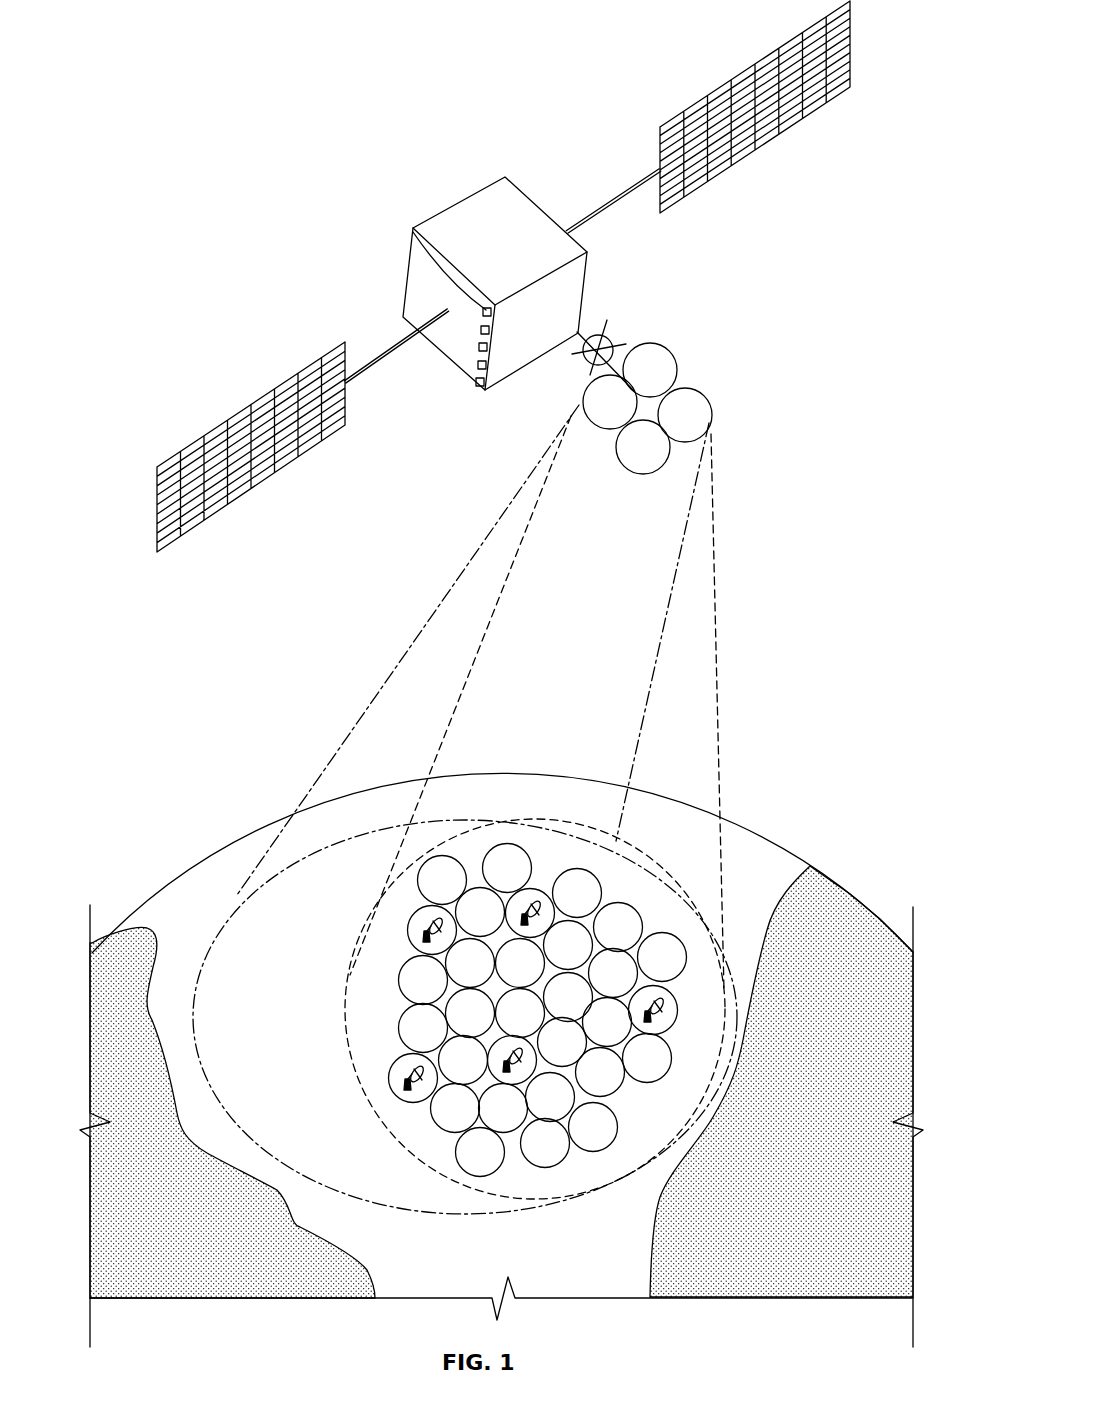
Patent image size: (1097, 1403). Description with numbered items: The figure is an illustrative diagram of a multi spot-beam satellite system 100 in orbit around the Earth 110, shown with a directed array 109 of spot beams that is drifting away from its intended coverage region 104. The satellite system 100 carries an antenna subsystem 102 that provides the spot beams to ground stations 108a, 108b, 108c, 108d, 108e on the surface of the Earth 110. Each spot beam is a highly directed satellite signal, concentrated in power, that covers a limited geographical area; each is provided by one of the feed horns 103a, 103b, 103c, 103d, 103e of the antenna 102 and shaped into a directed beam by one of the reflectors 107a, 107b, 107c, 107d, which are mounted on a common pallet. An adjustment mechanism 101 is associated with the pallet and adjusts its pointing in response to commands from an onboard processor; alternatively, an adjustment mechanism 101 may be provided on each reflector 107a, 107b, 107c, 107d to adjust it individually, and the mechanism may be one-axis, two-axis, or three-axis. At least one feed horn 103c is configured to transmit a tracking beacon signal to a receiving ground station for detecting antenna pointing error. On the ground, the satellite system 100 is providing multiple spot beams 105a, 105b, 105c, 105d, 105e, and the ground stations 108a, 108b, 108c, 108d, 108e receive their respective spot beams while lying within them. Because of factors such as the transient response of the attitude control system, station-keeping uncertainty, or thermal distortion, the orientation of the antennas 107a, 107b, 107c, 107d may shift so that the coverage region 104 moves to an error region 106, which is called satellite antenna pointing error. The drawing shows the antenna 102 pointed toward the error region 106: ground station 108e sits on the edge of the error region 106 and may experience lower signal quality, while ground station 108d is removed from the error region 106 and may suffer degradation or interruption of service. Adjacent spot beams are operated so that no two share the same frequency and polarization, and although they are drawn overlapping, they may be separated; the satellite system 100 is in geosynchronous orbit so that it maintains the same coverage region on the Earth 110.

The multi spot-beam satellite system 100 is at (296, 210).
The adjustment mechanism 101 is at (607, 338).
The antenna subsystem 102 is at (697, 446).
The feed horn 103a is at (484, 311).
The feed horn 103b is at (481, 330).
The feed horn 103c is at (478, 350).
The feed horn 103d is at (477, 368).
The feed horn 103e is at (477, 384).
The coverage region 104 is at (715, 662).
The spot beam 105a is at (359, 943).
The spot beam 105b is at (351, 1088).
The spot beam 105c is at (487, 1141).
The spot beam 105d is at (705, 925).
The spot beam 105e is at (512, 864).
The error region 106 is at (432, 618).
The reflector 107a is at (677, 361).
The reflector 107b is at (712, 413).
The reflector 107c is at (645, 476).
The reflector 107d is at (605, 430).
The ground station 108a is at (424, 942).
The ground station 108b is at (405, 1090).
The ground station 108c is at (525, 1064).
The ground station 108d is at (672, 1005).
The ground station 108e is at (533, 893).
The directed array of spot beams 109 is at (528, 815).
The Earth 110 is at (854, 888).